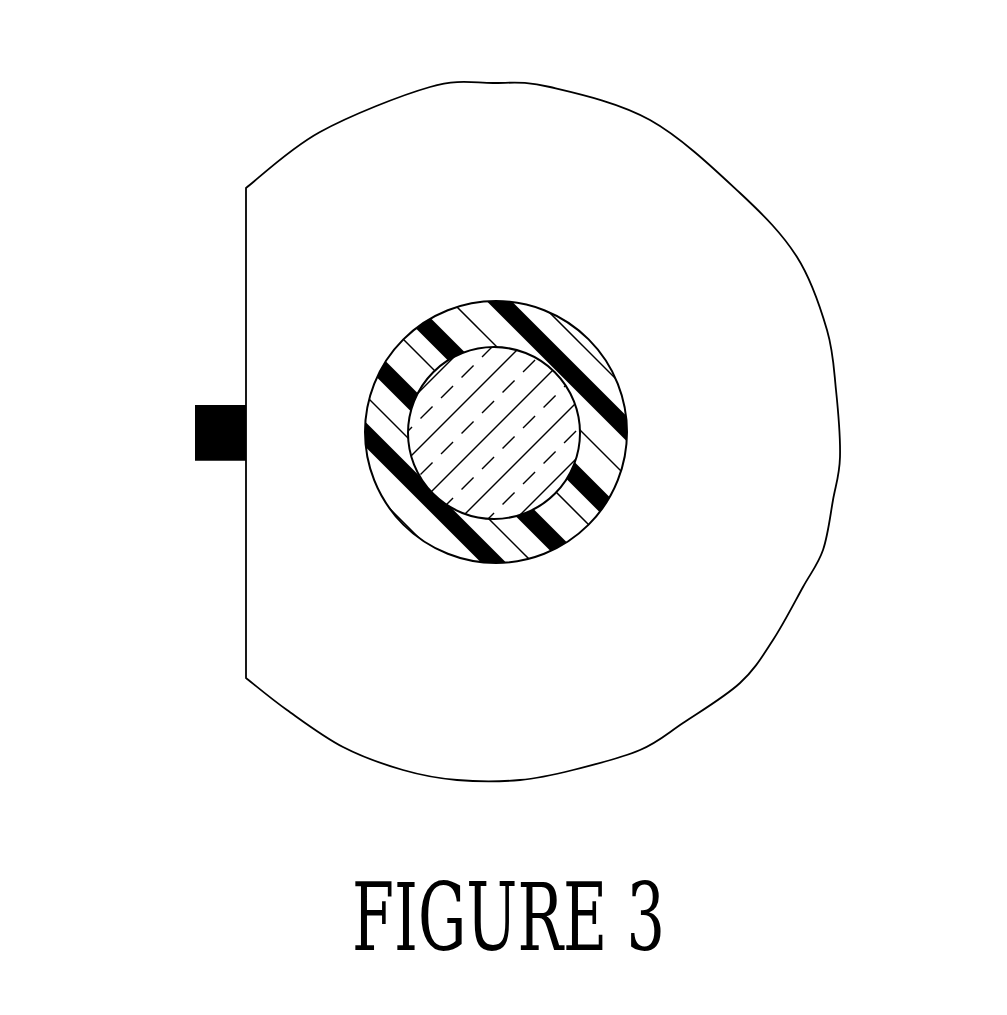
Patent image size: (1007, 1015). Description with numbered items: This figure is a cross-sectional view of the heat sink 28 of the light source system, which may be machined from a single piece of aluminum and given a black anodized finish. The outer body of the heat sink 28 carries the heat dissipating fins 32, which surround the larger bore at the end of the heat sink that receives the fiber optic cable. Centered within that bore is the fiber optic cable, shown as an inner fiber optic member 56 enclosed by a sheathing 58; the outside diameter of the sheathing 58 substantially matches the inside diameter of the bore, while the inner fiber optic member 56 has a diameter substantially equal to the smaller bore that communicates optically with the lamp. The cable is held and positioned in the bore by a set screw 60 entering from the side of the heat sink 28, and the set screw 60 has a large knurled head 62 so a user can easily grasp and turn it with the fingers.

The heat sink 28 is at (168, 67).
The heat dissipating fins 32 is at (617, 223).
The inner fiber optic member 56 is at (475, 498).
The sheathing 58 is at (600, 435).
The set screw 60 is at (190, 430).
The knurled head 62 is at (221, 460).